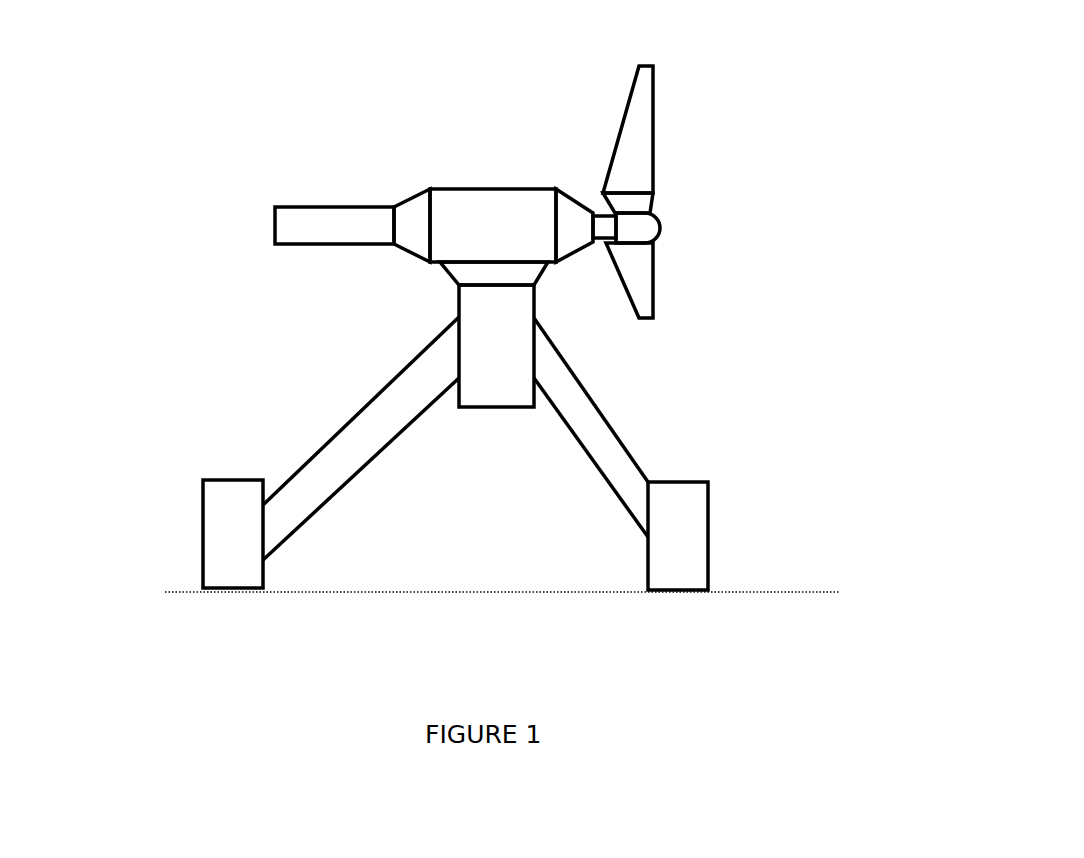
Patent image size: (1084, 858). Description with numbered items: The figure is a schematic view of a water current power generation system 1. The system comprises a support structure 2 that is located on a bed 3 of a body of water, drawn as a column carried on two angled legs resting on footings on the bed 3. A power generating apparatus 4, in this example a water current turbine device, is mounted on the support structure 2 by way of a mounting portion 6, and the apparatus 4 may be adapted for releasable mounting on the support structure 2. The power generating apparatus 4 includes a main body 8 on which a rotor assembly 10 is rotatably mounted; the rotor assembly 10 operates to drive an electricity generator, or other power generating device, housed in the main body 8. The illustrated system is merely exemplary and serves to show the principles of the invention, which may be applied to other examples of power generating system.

The water current power generation system 1 is at (108, 149).
The support structure 2 is at (245, 448).
The bed 3 is at (840, 592).
The power generating apparatus 4 is at (405, 159).
The mounting portion 6 is at (448, 275).
The main body 8 is at (488, 213).
The rotor assembly 10 is at (654, 128).